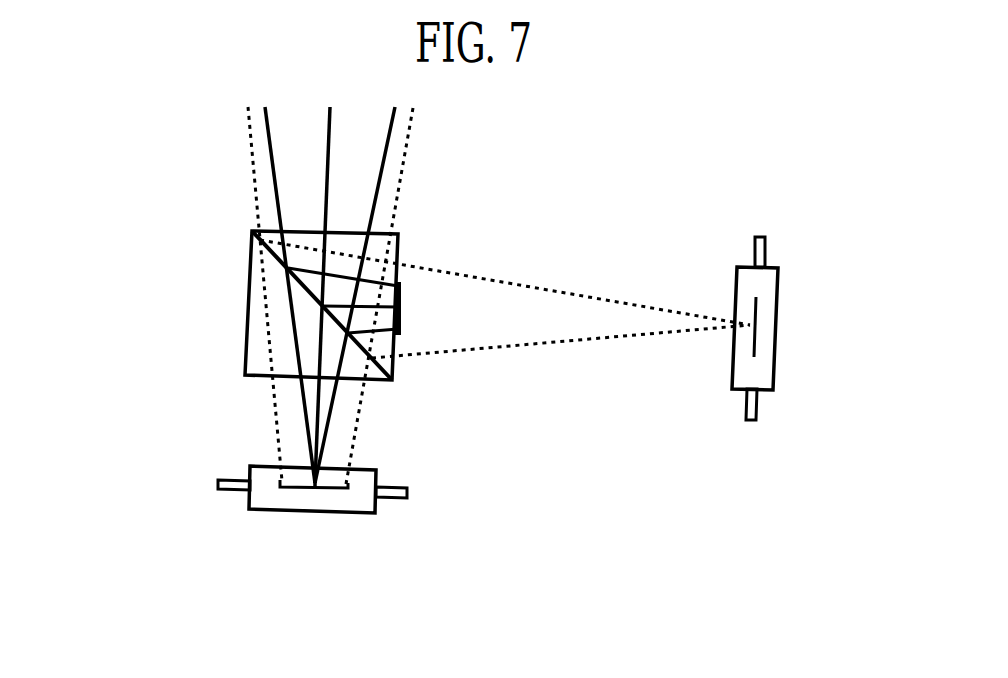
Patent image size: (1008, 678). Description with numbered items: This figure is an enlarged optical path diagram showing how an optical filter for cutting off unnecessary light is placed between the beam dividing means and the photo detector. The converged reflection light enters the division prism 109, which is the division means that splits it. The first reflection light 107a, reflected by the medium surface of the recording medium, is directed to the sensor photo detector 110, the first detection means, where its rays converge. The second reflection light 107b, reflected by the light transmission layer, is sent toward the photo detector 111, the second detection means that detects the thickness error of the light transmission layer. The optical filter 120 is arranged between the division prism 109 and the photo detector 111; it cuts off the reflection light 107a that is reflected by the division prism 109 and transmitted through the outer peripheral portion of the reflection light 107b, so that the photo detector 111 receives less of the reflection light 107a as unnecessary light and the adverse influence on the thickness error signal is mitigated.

The division prism 109 is at (246, 307).
The optical filter 120 is at (401, 312).
The reflection light 107a is at (383, 208).
The reflection light 107b is at (570, 340).
The sensor photo detector 110 is at (327, 513).
The photo detector 111 is at (775, 343).